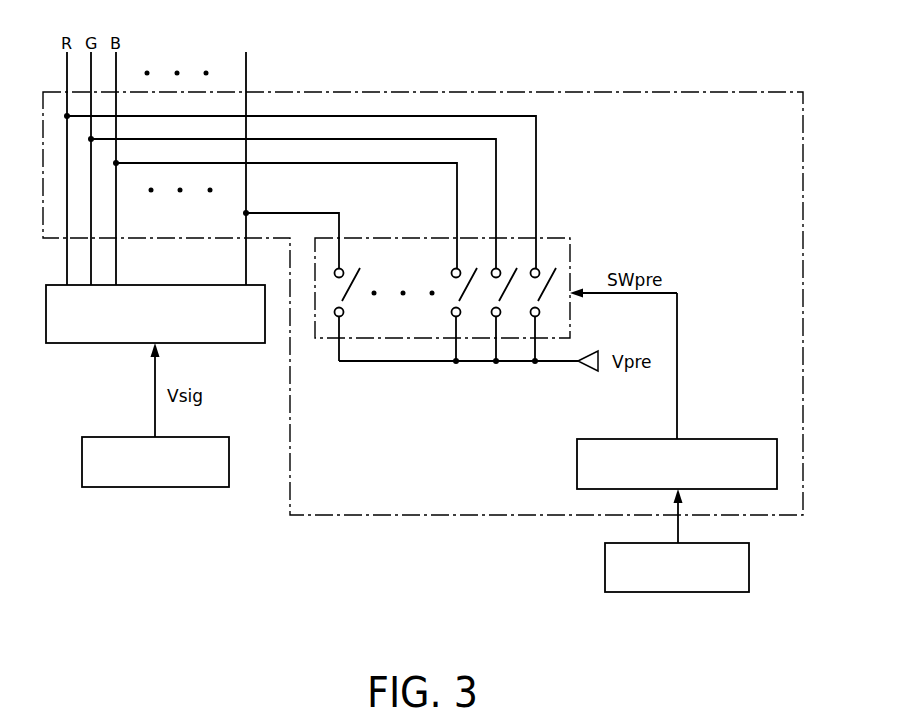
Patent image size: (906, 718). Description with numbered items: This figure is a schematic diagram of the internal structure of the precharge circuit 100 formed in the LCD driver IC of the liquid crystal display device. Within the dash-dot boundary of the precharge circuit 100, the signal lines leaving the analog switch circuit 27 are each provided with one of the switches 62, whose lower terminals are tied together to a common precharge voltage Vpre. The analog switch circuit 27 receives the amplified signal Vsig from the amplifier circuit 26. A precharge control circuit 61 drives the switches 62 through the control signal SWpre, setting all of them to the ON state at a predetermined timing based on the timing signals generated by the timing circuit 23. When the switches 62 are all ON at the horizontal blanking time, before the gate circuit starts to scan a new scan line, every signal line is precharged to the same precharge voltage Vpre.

The precharge circuit 100 is at (462, 92).
The switches 62 is at (570, 252).
The analog switch circuit 27 is at (105, 343).
The amplifier circuit 26 is at (148, 487).
The precharge control circuit 61 is at (577, 462).
The timing circuit 23 is at (605, 575).